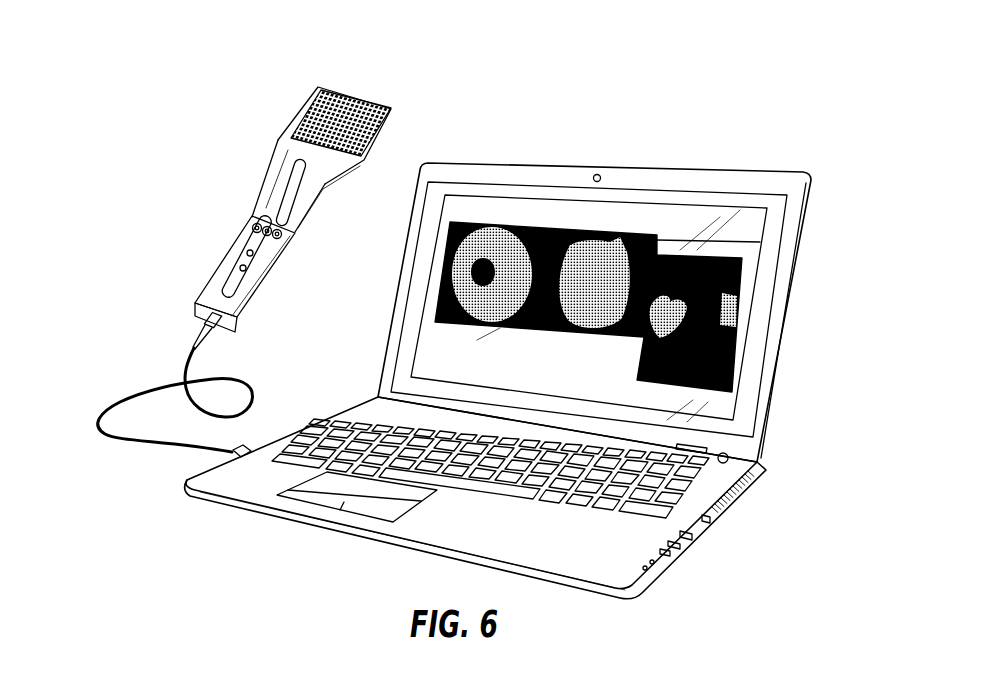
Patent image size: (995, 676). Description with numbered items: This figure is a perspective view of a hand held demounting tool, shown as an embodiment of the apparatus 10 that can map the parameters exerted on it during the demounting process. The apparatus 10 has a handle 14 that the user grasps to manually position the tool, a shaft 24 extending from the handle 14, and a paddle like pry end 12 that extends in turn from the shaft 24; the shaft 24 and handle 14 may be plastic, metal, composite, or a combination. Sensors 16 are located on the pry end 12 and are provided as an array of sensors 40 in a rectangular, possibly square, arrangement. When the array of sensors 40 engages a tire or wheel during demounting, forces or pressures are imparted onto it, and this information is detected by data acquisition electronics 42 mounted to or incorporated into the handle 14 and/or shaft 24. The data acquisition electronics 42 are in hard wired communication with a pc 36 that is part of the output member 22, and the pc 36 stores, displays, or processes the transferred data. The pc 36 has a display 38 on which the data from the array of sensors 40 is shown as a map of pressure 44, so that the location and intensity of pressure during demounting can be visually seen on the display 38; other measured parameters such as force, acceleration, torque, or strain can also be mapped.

The apparatus 10 is at (822, 102).
The pry end 12 is at (378, 103).
The handle 14 is at (218, 295).
The sensors 16 is at (297, 115).
The output member 22 is at (770, 370).
The shaft 24 is at (280, 188).
The pc 36 is at (700, 167).
The display 38 is at (735, 300).
The array of sensors 40 is at (334, 92).
The data acquisition electronics 42 is at (240, 283).
The map of pressure 44 is at (600, 230).